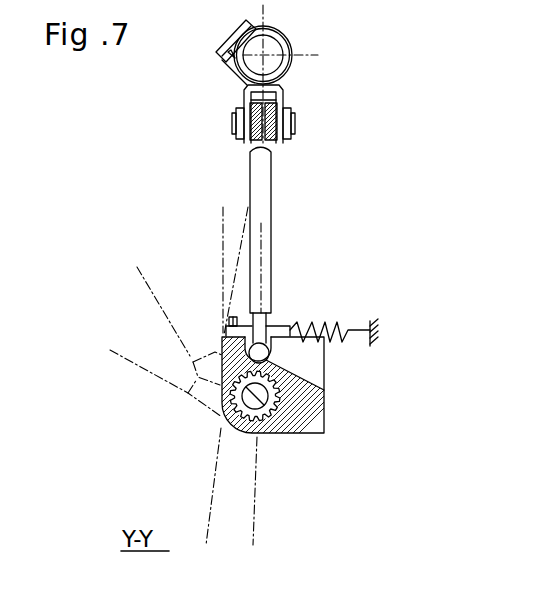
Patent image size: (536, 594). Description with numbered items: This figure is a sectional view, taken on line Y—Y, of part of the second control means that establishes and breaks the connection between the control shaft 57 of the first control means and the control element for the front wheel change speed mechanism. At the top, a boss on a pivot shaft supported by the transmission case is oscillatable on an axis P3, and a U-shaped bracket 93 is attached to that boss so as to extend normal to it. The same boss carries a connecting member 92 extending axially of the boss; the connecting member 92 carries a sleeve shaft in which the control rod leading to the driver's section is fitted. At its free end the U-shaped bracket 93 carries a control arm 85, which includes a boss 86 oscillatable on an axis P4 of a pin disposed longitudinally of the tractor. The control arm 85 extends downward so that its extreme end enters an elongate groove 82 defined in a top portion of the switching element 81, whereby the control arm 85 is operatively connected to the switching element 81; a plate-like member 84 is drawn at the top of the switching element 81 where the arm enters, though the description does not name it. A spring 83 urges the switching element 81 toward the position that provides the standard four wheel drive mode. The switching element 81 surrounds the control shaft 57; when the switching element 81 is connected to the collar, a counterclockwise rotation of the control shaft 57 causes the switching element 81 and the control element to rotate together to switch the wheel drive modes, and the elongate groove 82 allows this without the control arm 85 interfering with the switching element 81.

The axis P3 is at (263, 55).
The axis P4 is at (208, 122).
The connecting member 92 is at (222, 66).
The U-shaped bracket 93 is at (281, 95).
The boss 86 is at (245, 100).
The control arm 85 is at (266, 195).
The plate 84 is at (281, 316).
The spring 83 is at (331, 322).
The elongate groove 82 is at (274, 336).
The switching element 81 is at (315, 433).
The control shaft 57 is at (277, 437).